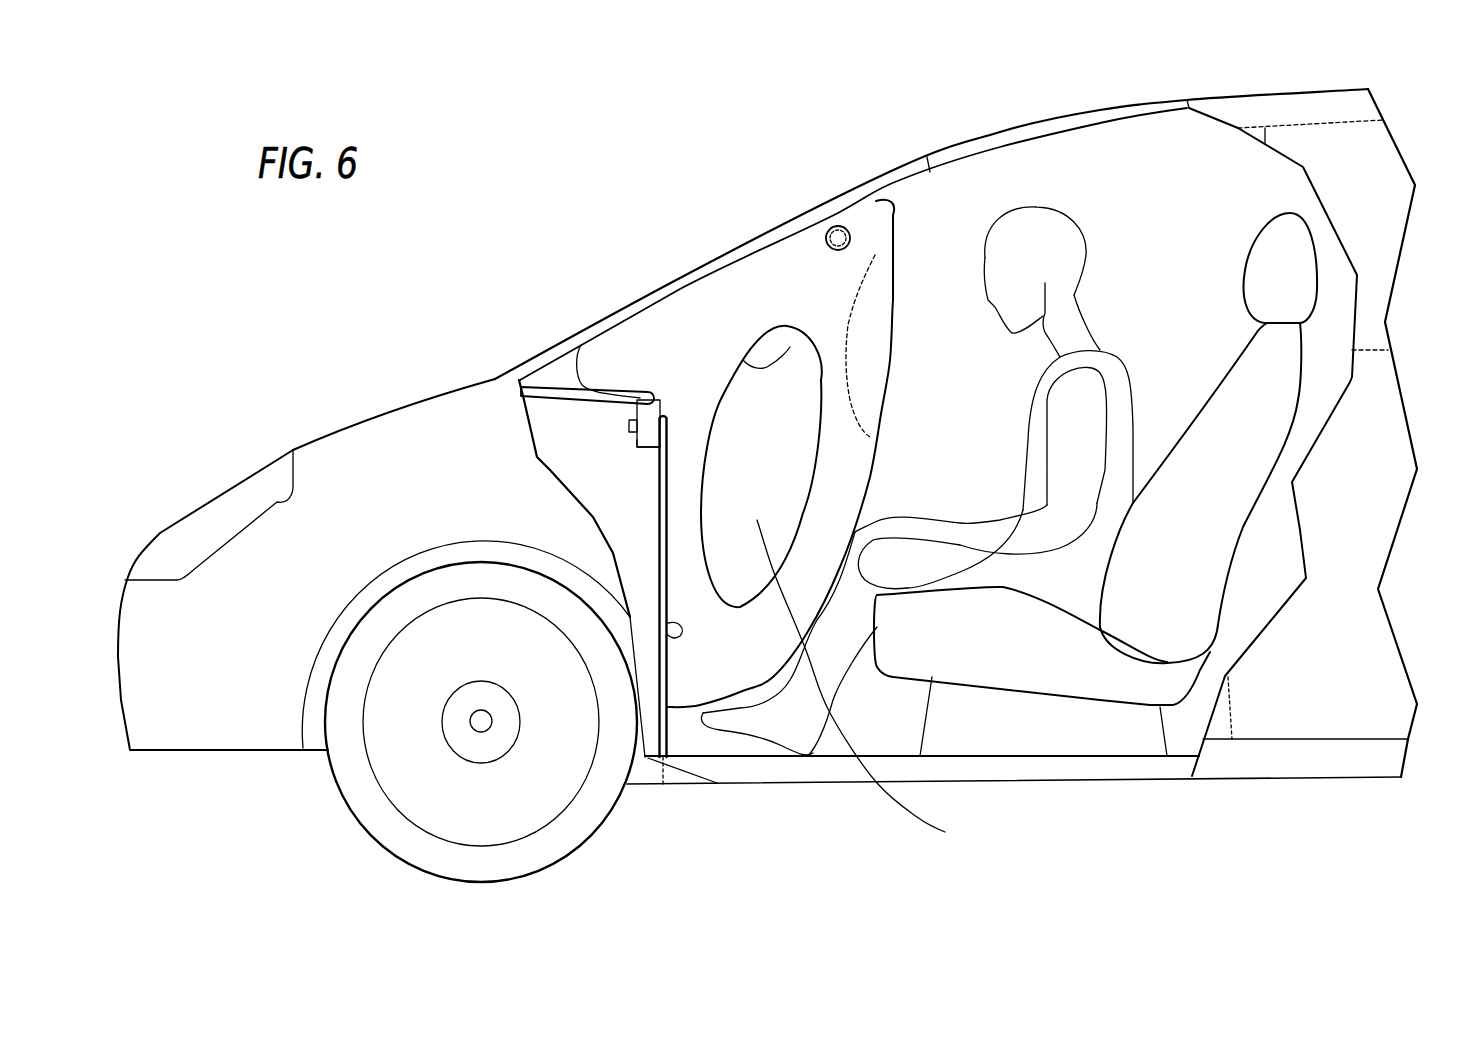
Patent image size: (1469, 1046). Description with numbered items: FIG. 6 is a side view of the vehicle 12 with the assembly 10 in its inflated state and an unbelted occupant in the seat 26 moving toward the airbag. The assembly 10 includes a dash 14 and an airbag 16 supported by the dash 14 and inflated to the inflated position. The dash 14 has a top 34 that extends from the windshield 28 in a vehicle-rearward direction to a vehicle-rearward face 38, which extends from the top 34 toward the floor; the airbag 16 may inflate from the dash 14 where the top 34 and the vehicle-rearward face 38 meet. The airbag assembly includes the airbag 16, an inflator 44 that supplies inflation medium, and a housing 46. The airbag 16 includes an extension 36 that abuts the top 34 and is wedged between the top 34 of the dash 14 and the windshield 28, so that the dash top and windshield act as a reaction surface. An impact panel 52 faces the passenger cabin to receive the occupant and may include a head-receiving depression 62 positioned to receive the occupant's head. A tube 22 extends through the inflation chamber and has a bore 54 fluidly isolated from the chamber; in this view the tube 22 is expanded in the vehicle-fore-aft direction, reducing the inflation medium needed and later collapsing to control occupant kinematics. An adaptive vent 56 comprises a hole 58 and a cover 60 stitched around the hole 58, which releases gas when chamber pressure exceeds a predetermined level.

The assembly 10 is at (540, 381).
The vehicle 12 is at (1275, 65).
The dash 14 is at (674, 738).
The airbag 16 is at (655, 331).
The tube 22 is at (752, 365).
The seat 26 is at (1260, 522).
The windshield 28 is at (813, 205).
The top 34 is at (558, 375).
The extension 36 is at (590, 368).
The vehicle-rearward face 38 is at (683, 627).
The inflator 44 is at (630, 423).
The housing 46 is at (633, 442).
The impact panel 52 is at (870, 477).
The bore 54 is at (868, 682).
The adaptive vent 56 is at (818, 247).
The hole 58 is at (840, 226).
The cover 60 is at (855, 240).
The head-receiving depression 62 is at (850, 337).